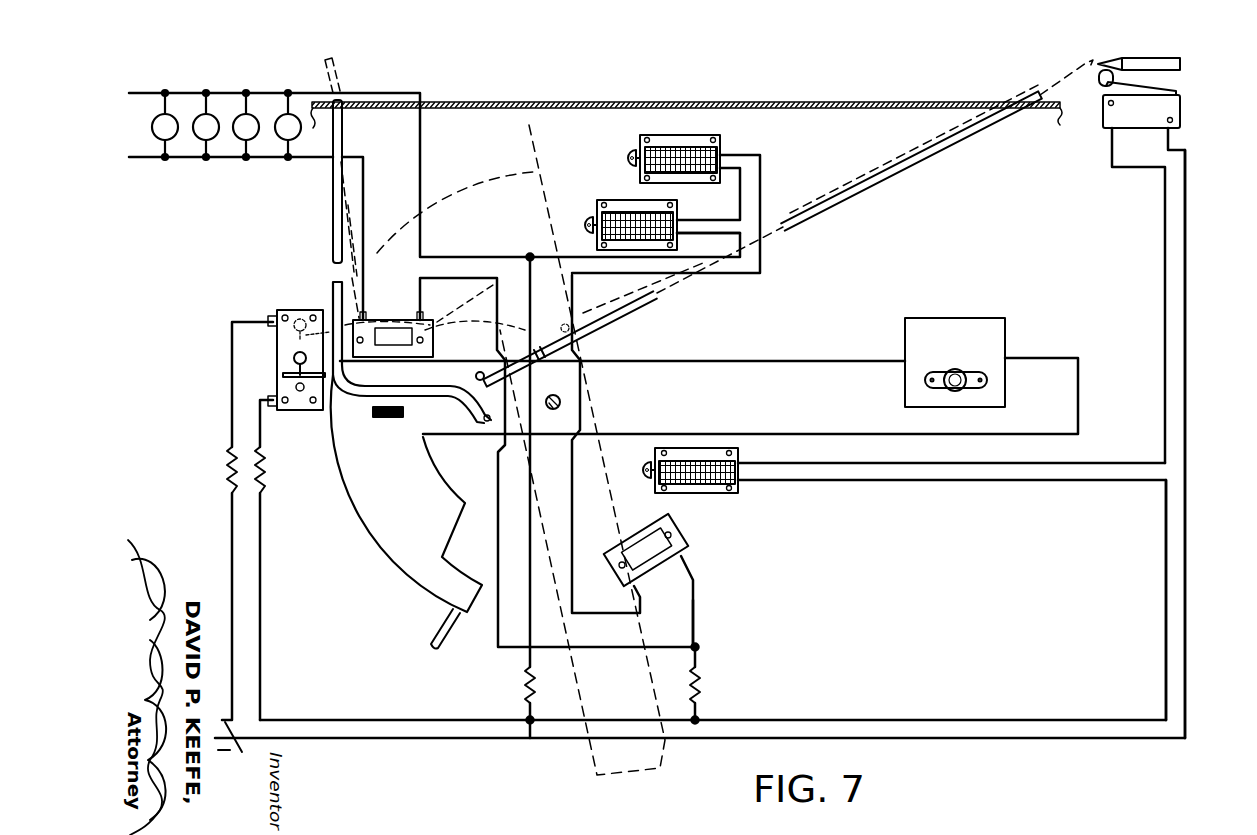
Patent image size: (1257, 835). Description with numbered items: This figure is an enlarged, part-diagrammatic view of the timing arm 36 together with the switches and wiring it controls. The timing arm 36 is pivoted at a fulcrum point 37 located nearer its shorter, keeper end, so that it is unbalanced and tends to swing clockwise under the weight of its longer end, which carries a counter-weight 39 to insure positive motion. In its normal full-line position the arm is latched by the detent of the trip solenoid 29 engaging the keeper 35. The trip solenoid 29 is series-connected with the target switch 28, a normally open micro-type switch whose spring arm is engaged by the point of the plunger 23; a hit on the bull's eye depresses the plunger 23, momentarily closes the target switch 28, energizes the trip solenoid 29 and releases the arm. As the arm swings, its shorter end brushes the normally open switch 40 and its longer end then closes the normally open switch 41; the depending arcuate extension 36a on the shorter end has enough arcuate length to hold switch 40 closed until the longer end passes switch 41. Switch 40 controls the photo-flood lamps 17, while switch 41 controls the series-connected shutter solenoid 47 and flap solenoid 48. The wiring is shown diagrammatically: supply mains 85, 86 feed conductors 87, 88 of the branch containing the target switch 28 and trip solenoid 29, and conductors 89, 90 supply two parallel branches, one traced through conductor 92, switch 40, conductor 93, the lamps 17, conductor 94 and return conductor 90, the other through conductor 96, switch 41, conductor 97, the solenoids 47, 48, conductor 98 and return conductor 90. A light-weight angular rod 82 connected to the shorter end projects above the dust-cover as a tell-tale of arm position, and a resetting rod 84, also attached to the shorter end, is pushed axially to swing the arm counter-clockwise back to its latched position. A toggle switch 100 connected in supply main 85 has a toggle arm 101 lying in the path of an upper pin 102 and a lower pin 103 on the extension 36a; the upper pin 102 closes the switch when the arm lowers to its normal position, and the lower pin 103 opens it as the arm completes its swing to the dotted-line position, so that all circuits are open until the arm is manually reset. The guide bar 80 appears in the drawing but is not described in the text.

The photo-flood lamps 17 is at (285, 126).
The plunger 23 is at (1172, 63).
The target switch 28 is at (1152, 112).
The trip solenoid 29 is at (710, 497).
The keeper 35 is at (379, 419).
The timing arm 36 is at (733, 380).
The depending arcuate extension 36a is at (393, 528).
The fulcrum point 37 is at (553, 411).
The counter-weight 39 is at (964, 319).
The switch 40 is at (392, 333).
The switch 41 is at (648, 560).
The shutter solenoid 47 is at (628, 221).
The solenoid 48 is at (681, 152).
The guide bar 80 is at (887, 101).
The angular rod 82 is at (332, 233).
The resetting rod 84 is at (917, 163).
The supply main 85 is at (1038, 719).
The supply main 86 is at (1038, 741).
The conductor 87 is at (1165, 597).
The conductor 88 is at (1187, 595).
The conductor 89 is at (697, 660).
The return conductor 90 is at (532, 633).
The conductor 92 is at (497, 540).
The conductor 93 is at (357, 243).
The conductor 94 is at (421, 232).
The conductor 96 is at (696, 607).
The conductor 97 is at (574, 533).
The conductor 98 is at (726, 259).
The toggle switch 100 is at (232, 323).
The toggle arm 101 is at (294, 367).
The upper pin 102 is at (283, 378).
The lower pin 103 is at (433, 634).